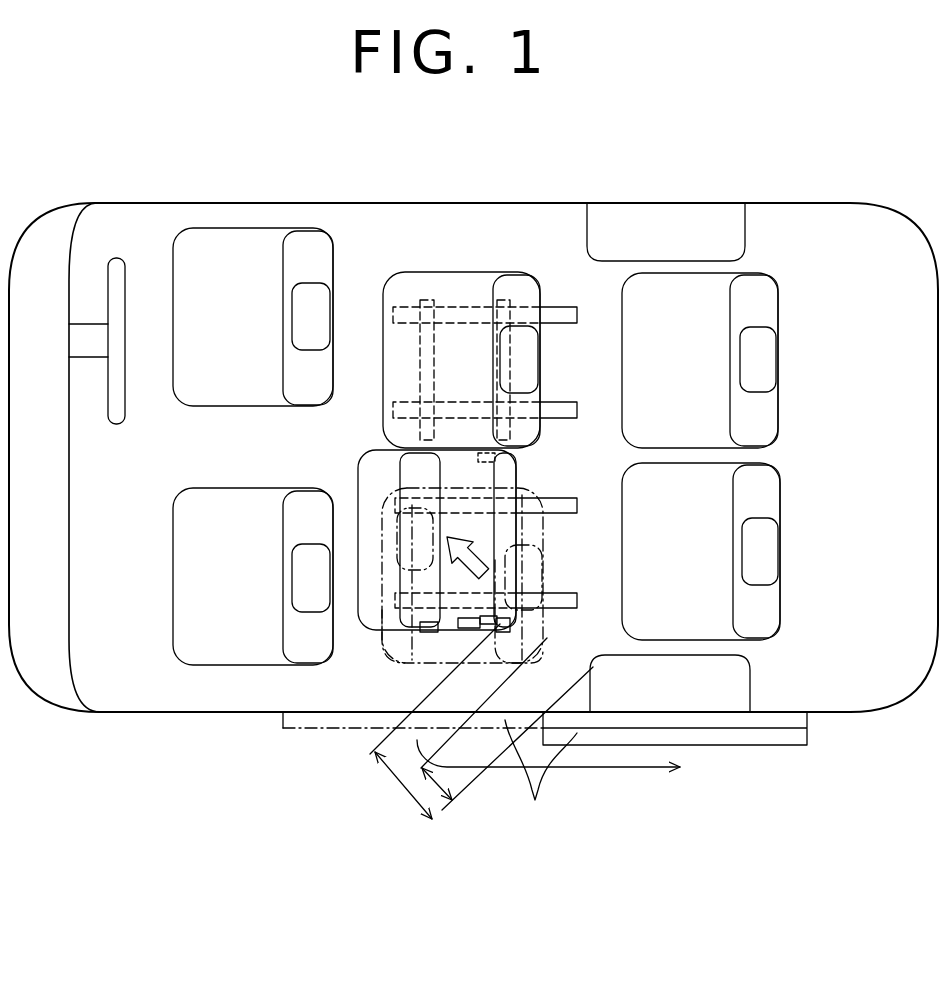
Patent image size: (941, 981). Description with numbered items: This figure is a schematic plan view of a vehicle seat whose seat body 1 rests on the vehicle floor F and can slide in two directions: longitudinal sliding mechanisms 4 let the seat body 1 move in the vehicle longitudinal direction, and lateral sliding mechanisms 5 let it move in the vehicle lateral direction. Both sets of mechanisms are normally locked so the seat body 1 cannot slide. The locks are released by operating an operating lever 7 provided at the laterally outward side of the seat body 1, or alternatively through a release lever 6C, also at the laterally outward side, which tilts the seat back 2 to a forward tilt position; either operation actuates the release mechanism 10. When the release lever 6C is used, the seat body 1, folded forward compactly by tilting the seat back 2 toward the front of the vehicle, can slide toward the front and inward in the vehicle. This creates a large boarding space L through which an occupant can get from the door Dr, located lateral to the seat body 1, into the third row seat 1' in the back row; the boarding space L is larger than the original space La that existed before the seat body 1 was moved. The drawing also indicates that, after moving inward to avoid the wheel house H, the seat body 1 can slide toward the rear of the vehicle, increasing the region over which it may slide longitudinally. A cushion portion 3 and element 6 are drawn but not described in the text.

The seat body 1 is at (517, 521).
The third row seat 1' is at (728, 439).
The seat back 2 is at (452, 475).
The seat cushion 3 is at (380, 468).
The longitudinal sliding mechanisms 4 is at (577, 498).
The lateral sliding mechanisms 5 is at (480, 583).
The rotation mechanism 6 is at (498, 452).
The release lever 6C is at (470, 637).
The operating lever 7 is at (413, 633).
The release mechanism 10 is at (512, 621).
The vehicle floor F is at (514, 222).
The wheel house H is at (660, 222).
The boarding space L is at (398, 790).
The original space La is at (438, 802).
The door Dr is at (541, 778).